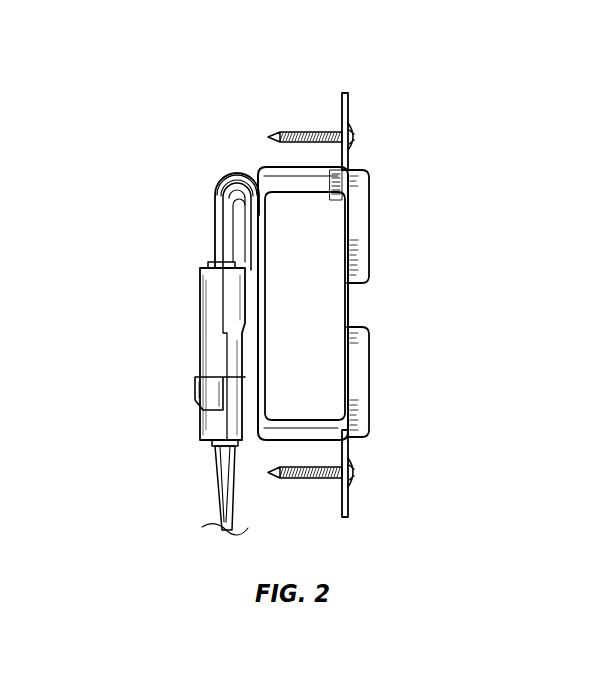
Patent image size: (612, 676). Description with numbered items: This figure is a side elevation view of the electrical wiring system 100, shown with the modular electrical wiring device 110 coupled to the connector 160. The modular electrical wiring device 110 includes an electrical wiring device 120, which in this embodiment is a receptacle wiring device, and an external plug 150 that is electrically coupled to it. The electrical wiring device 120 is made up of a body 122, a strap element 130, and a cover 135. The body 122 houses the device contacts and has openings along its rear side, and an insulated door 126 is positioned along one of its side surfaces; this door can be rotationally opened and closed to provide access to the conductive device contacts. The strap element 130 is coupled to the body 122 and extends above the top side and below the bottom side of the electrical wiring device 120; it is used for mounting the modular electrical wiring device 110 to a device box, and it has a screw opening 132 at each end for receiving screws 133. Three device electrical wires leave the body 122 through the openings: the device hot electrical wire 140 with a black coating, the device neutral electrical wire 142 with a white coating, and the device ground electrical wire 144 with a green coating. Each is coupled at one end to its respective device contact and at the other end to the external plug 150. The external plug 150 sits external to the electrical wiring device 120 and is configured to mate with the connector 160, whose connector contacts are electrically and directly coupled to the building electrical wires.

The electrical wiring system 100 is at (164, 60).
The modular electrical wiring device 110 is at (390, 268).
The electrical wiring device 120 is at (338, 428).
The body 122 is at (287, 428).
The insulated door 126 is at (330, 290).
The strap element 130 is at (348, 108).
The screw opening 132 is at (340, 125).
The screw 133 is at (290, 132).
The cover 135 is at (357, 230).
The device hot electrical wire 140 is at (215, 230).
The device neutral electrical wire 142 is at (242, 170).
The device ground electrical wire 144 is at (227, 175).
The external plug 150 is at (210, 320).
The connector 160 is at (210, 407).